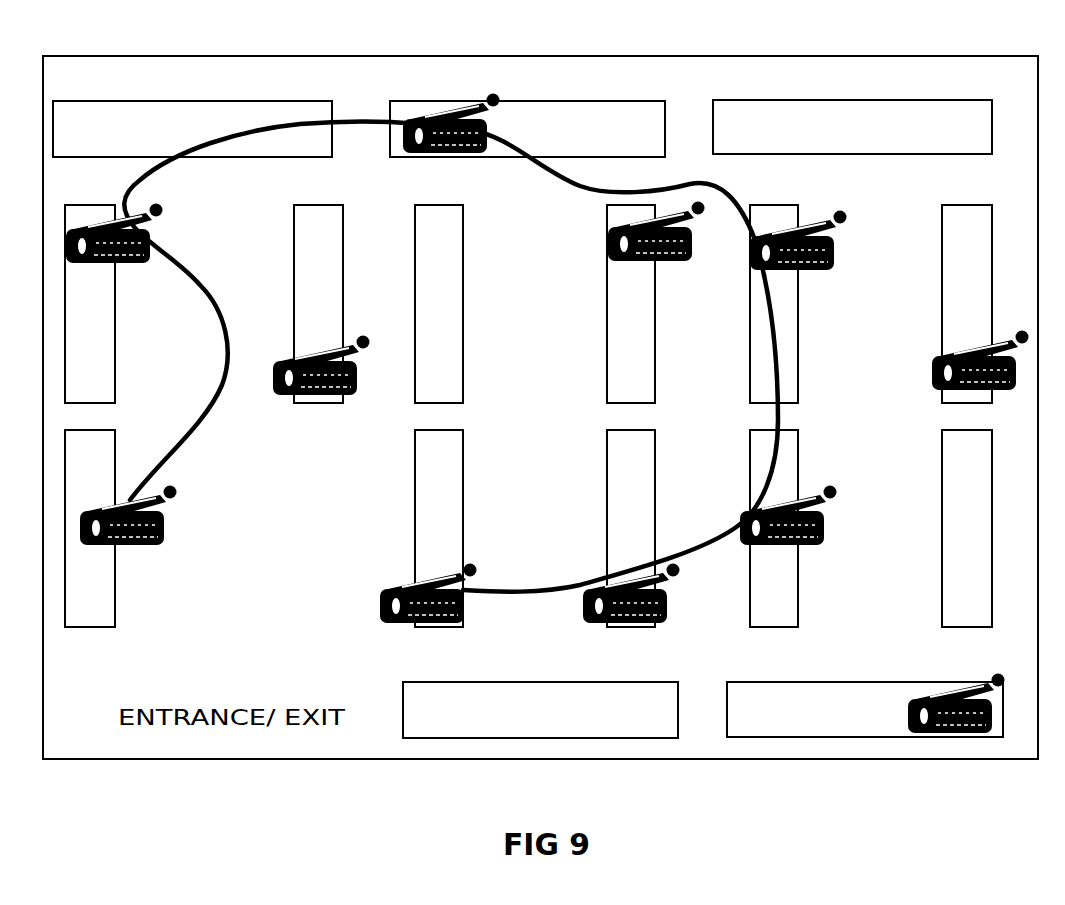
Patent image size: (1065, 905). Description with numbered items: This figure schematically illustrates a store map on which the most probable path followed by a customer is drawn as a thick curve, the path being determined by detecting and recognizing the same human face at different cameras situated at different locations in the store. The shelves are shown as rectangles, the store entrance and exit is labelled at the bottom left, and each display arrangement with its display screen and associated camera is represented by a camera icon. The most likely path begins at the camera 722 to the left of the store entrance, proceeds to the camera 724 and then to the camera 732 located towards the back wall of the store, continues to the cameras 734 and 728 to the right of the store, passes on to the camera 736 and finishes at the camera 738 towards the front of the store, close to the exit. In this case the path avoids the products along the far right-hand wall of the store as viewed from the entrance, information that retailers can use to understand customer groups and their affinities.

The camera 722 is at (170, 538).
The camera 724 is at (150, 236).
The camera 728 is at (800, 490).
The camera 732 is at (437, 105).
The camera 734 is at (820, 216).
The camera 736 is at (665, 603).
The camera 738 is at (440, 625).